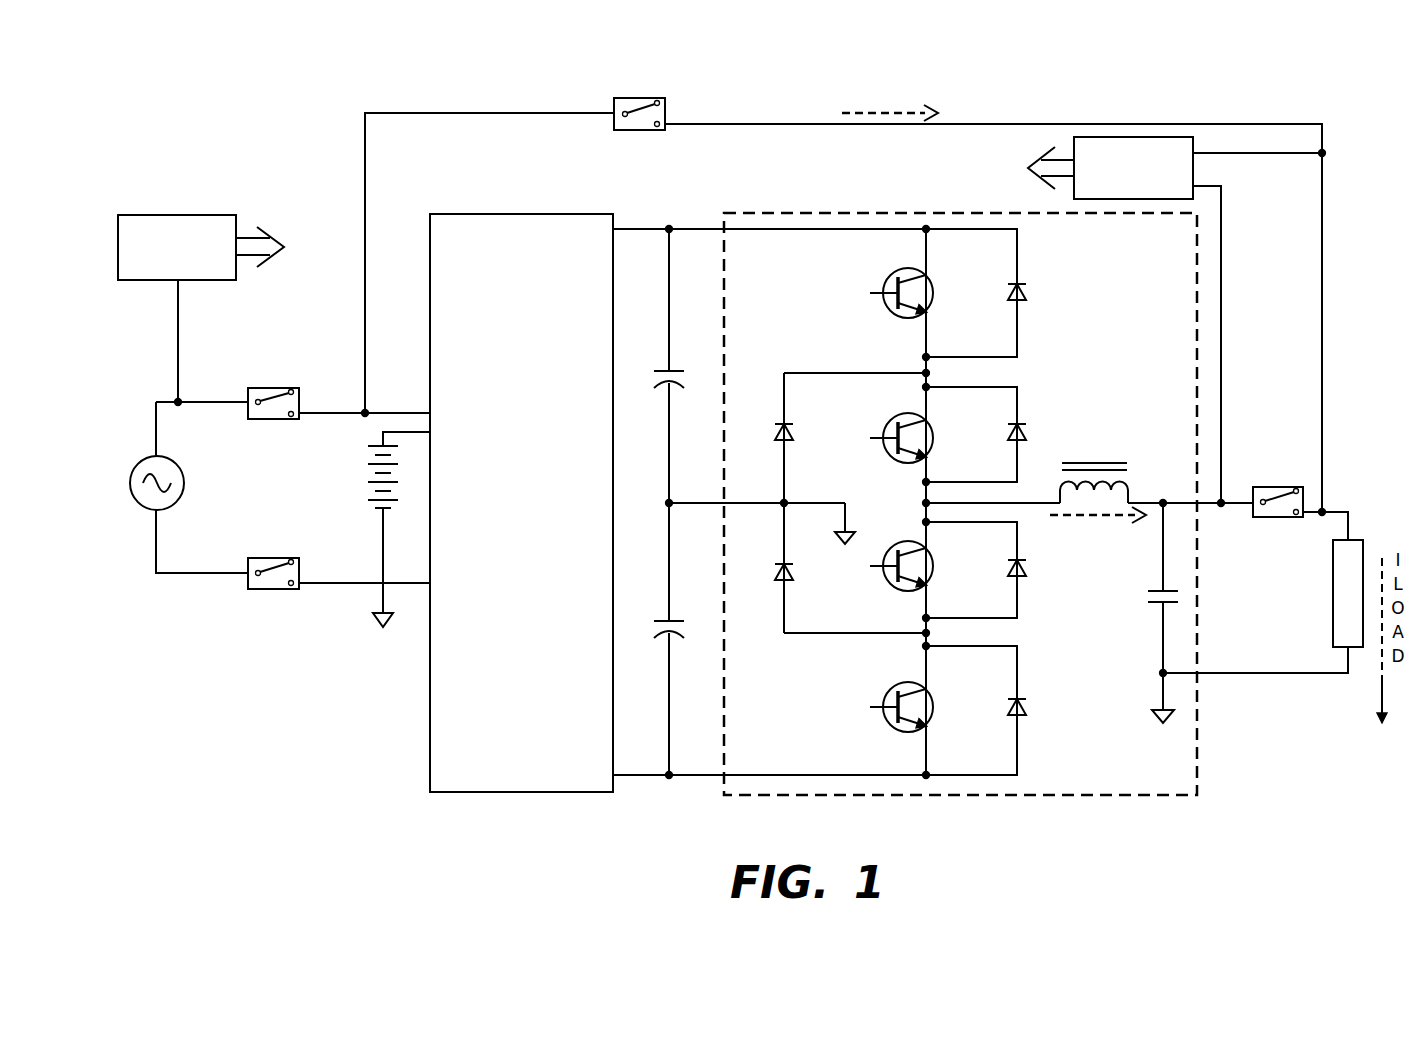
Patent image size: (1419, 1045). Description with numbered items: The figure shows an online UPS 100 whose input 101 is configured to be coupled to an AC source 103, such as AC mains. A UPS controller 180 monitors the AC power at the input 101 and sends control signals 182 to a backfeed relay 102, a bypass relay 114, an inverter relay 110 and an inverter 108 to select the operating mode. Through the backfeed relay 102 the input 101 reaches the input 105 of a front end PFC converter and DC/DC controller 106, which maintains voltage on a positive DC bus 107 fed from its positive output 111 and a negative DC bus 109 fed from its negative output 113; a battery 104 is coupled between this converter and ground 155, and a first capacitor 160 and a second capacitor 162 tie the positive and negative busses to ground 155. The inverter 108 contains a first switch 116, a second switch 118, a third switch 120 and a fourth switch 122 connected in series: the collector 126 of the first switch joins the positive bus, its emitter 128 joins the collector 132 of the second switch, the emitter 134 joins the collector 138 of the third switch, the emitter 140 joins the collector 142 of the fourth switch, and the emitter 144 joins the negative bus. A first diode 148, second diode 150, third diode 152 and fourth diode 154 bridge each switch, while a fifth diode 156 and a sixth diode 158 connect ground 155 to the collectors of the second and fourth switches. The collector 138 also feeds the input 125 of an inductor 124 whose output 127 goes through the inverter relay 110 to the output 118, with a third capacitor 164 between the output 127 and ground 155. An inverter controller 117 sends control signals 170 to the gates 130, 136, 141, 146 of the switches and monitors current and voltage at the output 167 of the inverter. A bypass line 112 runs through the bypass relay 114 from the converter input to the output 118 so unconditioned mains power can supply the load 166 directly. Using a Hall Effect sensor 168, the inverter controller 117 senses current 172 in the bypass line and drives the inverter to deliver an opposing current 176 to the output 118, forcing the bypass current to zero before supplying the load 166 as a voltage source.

The online UPS 100 is at (233, 158).
The input 101 is at (250, 392).
The backfeed relay 102 is at (299, 390).
The AC source 103 is at (171, 506).
The battery 104 is at (372, 503).
The input of the PFC converter and DC/DC controller 105 is at (429, 413).
The front end PFC converter and DC/DC controller 106 is at (525, 212).
The positive DC bus 107 is at (643, 229).
The inverter 108 is at (857, 212).
The negative DC bus 109 is at (712, 778).
The inverter relay 110 is at (1274, 517).
The positive output 111 is at (622, 229).
The bypass line 112 is at (492, 112).
The negative output 113 is at (620, 775).
The bypass relay 114 is at (612, 120).
The first switch 116 is at (889, 313).
The inverter controller 117 is at (1142, 137).
The output 118 is at (889, 458).
The third switch 120 is at (889, 586).
The fourth switch 122 is at (889, 727).
The inductor 124 is at (1098, 462).
The input of the inductor 125 is at (1047, 505).
The collector of the first switch 126 is at (923, 273).
The output of the inductor 127 is at (1135, 503).
The emitter of the first switch 128 is at (913, 318).
The gate of the first switch 130 is at (872, 293).
The collector of the second switch 132 is at (923, 418).
The emitter of the second switch 134 is at (913, 463).
The gate of the second switch 136 is at (872, 438).
The collector of the third switch 138 is at (923, 546).
The emitter of the third switch 140 is at (913, 591).
The gate of the third switch 141 is at (872, 566).
The collector of the fourth switch 142 is at (923, 687).
The emitter of the fourth switch 144 is at (913, 732).
The gate of the fourth switch 146 is at (872, 707).
The first diode 148 is at (1024, 287).
The second diode 150 is at (1023, 428).
The third diode 152 is at (1023, 578).
The fourth diode 154 is at (1021, 718).
The ground 155 is at (378, 626).
The fifth diode 156 is at (780, 440).
The sixth diode 158 is at (780, 580).
The first capacitor 160 is at (666, 371).
The second capacitor 162 is at (666, 621).
The third capacitor 164 is at (1156, 603).
The load 166 is at (1333, 609).
The output of the inverter 167 is at (1221, 506).
The Hall Effect sensor 168 is at (1323, 153).
The control signals 170 is at (1068, 158).
The current in the bypass line 172 is at (843, 113).
The current delivered to the output 176 is at (1110, 517).
The UPS controller 180 is at (215, 215).
The control signals 182 is at (283, 234).